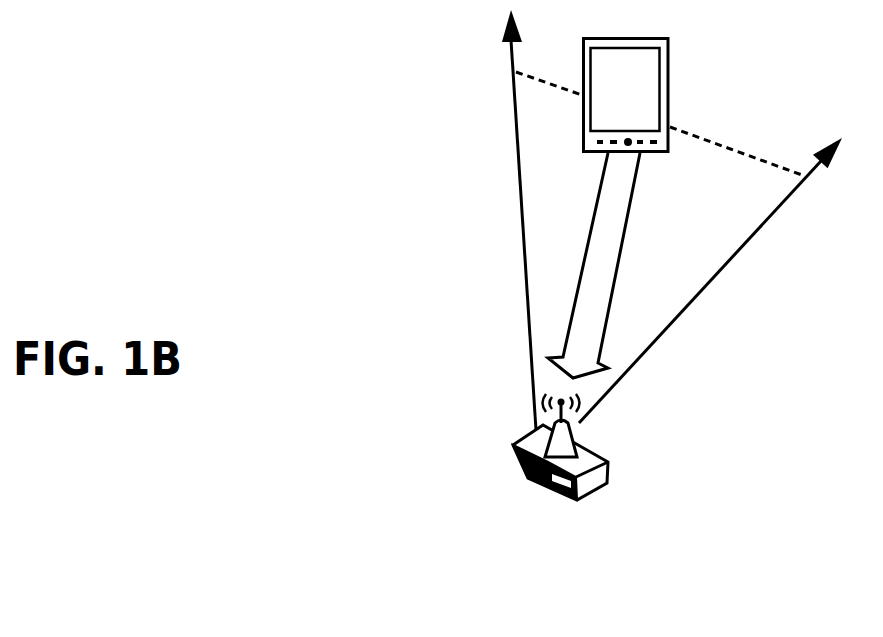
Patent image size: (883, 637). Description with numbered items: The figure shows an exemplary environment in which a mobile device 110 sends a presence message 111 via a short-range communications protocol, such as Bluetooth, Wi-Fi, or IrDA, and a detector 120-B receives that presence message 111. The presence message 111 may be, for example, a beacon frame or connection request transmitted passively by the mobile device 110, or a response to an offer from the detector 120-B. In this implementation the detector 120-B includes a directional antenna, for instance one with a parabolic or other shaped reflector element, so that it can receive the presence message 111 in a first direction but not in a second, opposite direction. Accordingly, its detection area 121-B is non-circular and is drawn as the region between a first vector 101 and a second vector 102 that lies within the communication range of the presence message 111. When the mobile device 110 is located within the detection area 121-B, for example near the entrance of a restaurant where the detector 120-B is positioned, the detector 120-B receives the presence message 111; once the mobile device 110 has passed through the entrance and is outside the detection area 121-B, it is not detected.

The detection area 121-B is at (540, 178).
The second vector 102 is at (518, 212).
The first vector 101 is at (707, 288).
The mobile device 110 is at (669, 107).
The presence message 111 is at (573, 320).
The detector 120-B is at (578, 503).